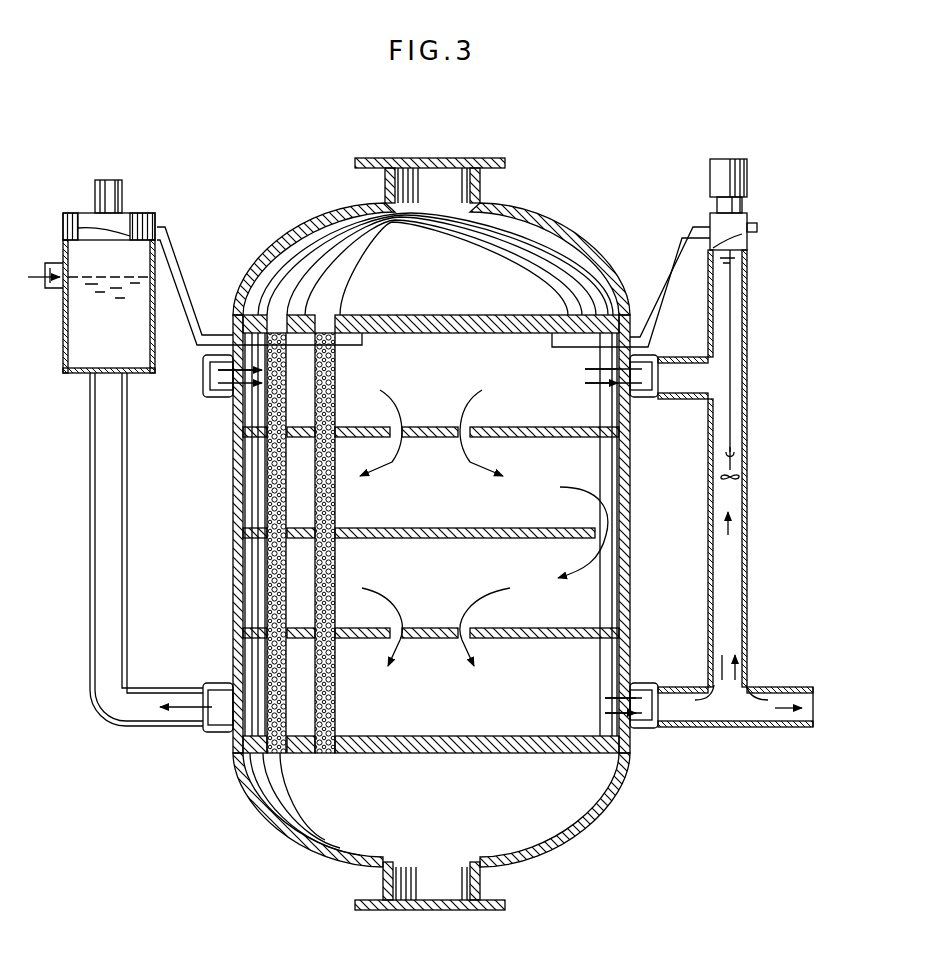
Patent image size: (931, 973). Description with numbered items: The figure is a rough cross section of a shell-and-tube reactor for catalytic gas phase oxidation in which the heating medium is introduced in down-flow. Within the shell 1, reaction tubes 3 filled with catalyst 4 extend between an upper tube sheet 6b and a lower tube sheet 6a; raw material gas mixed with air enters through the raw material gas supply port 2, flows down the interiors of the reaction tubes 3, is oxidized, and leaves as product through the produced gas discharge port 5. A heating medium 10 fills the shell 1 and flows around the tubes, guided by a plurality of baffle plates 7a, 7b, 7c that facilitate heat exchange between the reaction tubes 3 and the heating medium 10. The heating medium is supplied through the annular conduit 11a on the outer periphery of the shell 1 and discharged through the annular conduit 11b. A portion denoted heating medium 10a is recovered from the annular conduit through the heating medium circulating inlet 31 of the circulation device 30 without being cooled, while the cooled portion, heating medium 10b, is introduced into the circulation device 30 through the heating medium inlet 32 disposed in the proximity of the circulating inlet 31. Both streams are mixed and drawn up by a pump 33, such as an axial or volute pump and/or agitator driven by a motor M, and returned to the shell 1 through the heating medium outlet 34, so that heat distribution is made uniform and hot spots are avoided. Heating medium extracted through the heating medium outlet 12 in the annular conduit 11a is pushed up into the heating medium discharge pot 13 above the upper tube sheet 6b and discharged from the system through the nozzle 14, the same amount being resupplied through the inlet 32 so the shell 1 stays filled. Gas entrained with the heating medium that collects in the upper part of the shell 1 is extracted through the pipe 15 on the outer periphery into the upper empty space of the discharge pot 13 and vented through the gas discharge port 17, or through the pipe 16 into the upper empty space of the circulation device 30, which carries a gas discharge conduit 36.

The shell 1 is at (235, 488).
The raw material gas supply port 2 is at (430, 902).
The reaction tubes 3 is at (265, 405).
The catalyst 4 is at (268, 655).
The produced gas discharge port 5 is at (427, 188).
The lower tube sheet 6a is at (603, 778).
The upper tube sheet 6b is at (517, 313).
The baffle plate 7a is at (600, 440).
The baffle plate 7b is at (603, 530).
The baffle plate 7c is at (603, 628).
The heating medium 10 is at (458, 420).
The heating medium 10a is at (640, 728).
The heating medium 10b is at (192, 702).
The annular conduit 11a is at (215, 732).
The annular conduit 11b is at (203, 375).
The heating medium outlet 12 is at (172, 728).
The heating medium discharge pot 13 is at (90, 345).
The nozzle 14 is at (58, 265).
The pipe 15 is at (250, 286).
The pipe 16 is at (615, 303).
The gas discharge port 17 is at (110, 200).
The circulation device 30 is at (748, 597).
The heating medium circulating inlet 31 is at (668, 702).
The heating medium inlet 32 is at (815, 708).
The pump 33 is at (742, 478).
The heating medium outlet 34 is at (712, 375).
The gas discharge conduit 36 is at (757, 227).
The motor M is at (750, 182).